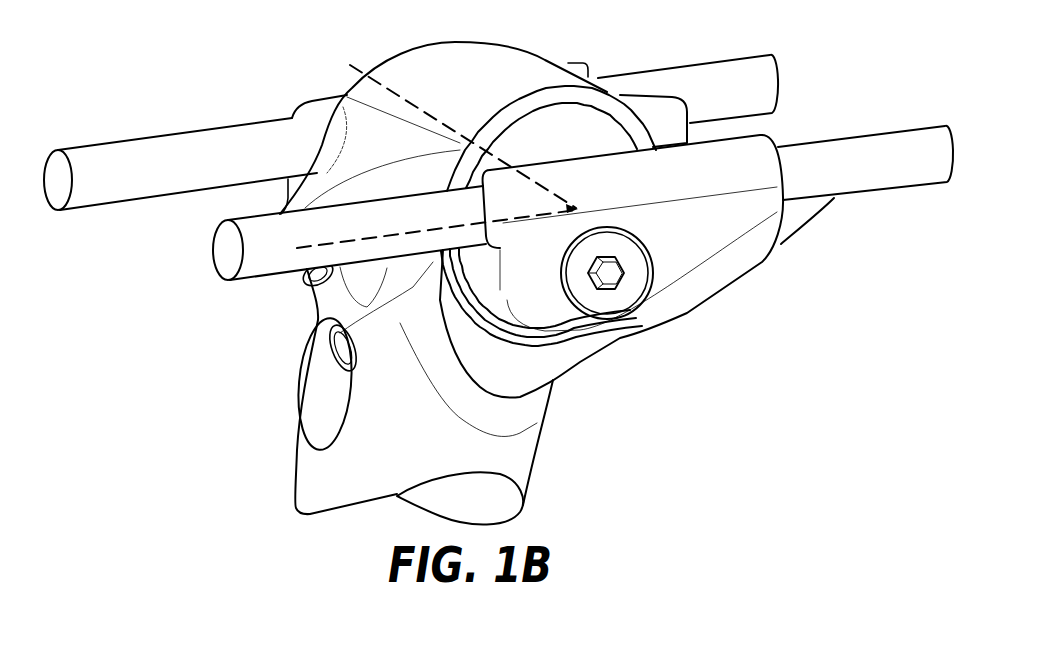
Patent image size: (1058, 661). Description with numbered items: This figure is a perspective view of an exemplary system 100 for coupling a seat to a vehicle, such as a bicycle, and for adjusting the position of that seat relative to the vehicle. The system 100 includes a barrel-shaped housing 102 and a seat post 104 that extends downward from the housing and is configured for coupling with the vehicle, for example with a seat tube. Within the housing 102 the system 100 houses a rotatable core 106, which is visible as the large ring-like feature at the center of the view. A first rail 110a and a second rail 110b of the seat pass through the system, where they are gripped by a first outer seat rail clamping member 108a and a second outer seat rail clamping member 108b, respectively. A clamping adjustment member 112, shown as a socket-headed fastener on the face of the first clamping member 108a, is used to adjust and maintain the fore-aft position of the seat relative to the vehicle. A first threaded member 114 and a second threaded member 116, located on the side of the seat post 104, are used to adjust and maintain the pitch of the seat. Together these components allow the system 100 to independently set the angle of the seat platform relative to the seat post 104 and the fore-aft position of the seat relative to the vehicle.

The system 100 is at (152, 40).
The housing 102 is at (488, 85).
The seat post 104 is at (353, 490).
The rotatable core 106 is at (577, 137).
The first outer seat rail clamping member 108a is at (727, 233).
The second outer seat rail clamping member 108b is at (325, 105).
The first rail 110a is at (878, 153).
The second rail 110b is at (150, 148).
The clamping adjustment member 112 is at (625, 297).
The first threaded member 114 is at (307, 277).
The second threaded member 116 is at (333, 350).